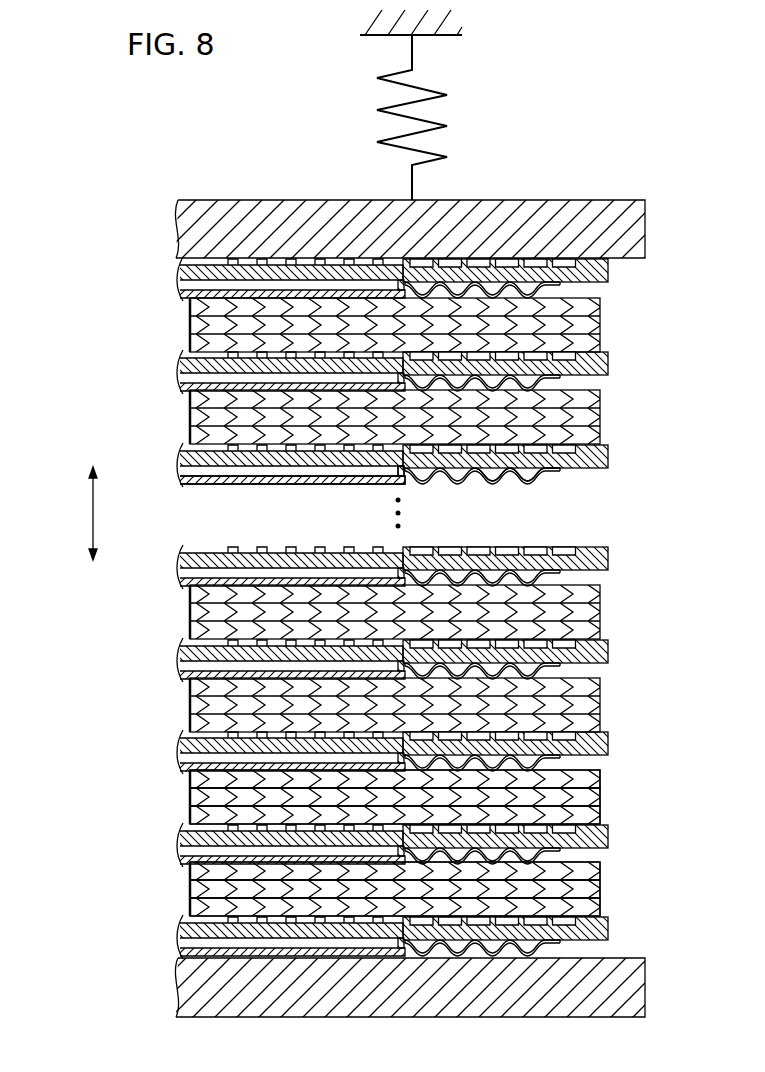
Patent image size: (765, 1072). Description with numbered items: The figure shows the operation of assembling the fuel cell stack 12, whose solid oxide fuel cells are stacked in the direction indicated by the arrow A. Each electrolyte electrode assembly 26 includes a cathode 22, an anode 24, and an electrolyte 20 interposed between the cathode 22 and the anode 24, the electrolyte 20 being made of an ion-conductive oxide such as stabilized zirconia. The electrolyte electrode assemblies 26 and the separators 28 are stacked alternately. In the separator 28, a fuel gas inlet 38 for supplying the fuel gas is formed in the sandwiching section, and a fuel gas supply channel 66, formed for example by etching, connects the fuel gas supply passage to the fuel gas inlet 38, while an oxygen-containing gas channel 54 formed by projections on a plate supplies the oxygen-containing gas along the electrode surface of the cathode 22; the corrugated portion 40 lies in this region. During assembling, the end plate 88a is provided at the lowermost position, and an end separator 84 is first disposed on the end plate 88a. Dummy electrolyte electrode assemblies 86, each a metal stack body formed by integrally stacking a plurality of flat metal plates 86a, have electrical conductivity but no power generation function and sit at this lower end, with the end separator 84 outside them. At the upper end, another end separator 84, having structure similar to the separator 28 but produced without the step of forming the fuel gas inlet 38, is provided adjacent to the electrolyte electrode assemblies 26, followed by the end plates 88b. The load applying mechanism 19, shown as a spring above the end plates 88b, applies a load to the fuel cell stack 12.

The fuel cell stack 12 is at (593, 57).
The load applying mechanism 19 is at (456, 108).
The end plate 88b is at (630, 225).
The end plate 88a is at (630, 978).
The end separator 84 is at (612, 271).
The electrolyte electrode assembly 26 is at (606, 330).
The separator 28 is at (612, 363).
The dummy electrolyte electrode assembly 86 is at (117, 858).
The flat metal plate 86a is at (188, 872).
The cathode 22 is at (188, 780).
The electrolyte 20 is at (188, 800).
The anode 24 is at (188, 818).
The fuel gas supply channel 66 is at (296, 472).
The fuel gas inlet 38 is at (414, 478).
The oxygen-containing gas channel 54 is at (498, 483).
The corrugated separator plate 40 is at (540, 481).
The stacking direction arrow A is at (77, 513).